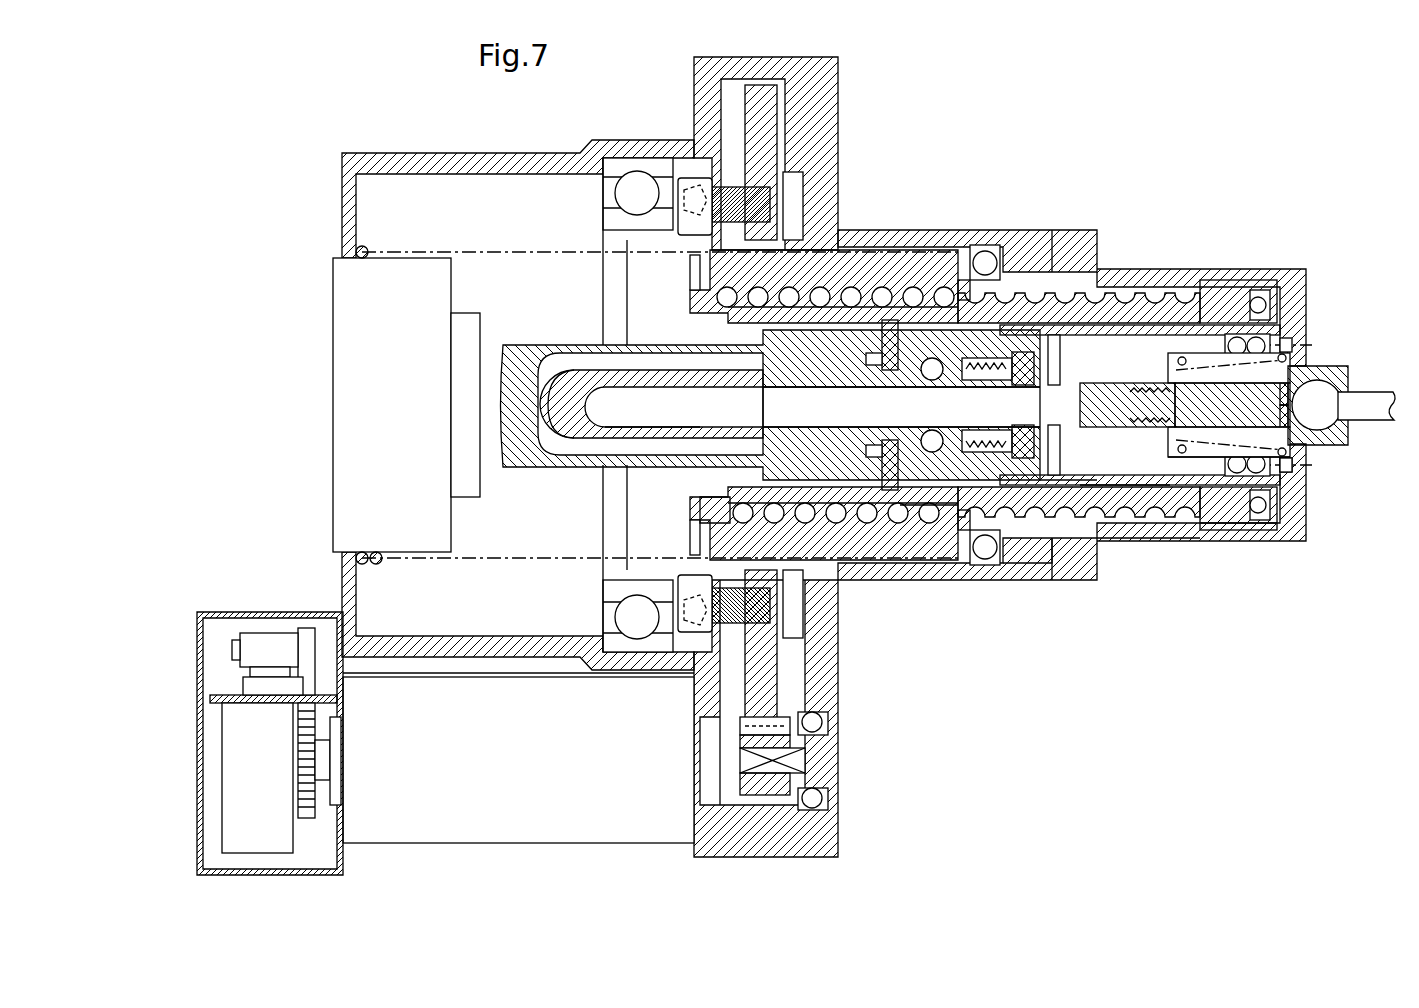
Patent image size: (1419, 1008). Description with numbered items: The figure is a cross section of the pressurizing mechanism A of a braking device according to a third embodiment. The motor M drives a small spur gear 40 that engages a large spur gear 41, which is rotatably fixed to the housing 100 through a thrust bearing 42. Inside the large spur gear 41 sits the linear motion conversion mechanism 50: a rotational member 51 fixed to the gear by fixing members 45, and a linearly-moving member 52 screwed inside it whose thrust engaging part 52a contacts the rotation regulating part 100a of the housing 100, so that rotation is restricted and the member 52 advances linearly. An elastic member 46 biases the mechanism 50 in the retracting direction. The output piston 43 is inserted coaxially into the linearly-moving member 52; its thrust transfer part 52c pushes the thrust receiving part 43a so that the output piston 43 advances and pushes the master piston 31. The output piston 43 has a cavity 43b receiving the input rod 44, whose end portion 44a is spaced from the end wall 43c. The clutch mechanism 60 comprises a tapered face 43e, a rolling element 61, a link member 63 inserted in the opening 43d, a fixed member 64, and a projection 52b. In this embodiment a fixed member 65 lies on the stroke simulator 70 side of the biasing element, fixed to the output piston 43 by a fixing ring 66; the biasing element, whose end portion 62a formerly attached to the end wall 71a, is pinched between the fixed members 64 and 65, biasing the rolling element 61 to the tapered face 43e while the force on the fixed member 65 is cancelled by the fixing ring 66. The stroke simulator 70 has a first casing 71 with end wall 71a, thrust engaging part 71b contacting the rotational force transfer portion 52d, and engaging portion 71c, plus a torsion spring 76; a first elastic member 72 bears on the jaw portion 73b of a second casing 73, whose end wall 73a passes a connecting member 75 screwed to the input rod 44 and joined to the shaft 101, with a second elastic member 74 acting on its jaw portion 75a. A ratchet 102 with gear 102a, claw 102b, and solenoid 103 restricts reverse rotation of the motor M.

The housing 100 is at (838, 70).
The rotation regulating part 100a is at (1080, 290).
The shaft 101 is at (1372, 395).
The ratchet 102 is at (308, 829).
The gear 102a is at (320, 748).
The claw 102b is at (305, 638).
The solenoid 103 is at (225, 752).
The master piston 31 is at (338, 275).
The small spur gear 40 is at (770, 795).
The large spur gear 41 is at (780, 130).
The thrust bearing 42 is at (852, 640).
The output piston 43 is at (855, 470).
The thrust receiving part 43a is at (705, 522).
The cavity 43b is at (620, 420).
The end wall 43c is at (600, 375).
The opening 43d is at (901, 407).
The tapered face 43e is at (950, 378).
The input rod 44 is at (1100, 450).
The end portion 44a is at (668, 430).
The fixing member 45 is at (692, 185).
The elastic member 46 is at (382, 562).
The linear motion conversion mechanism 50 is at (824, 283).
The rotational member 51 is at (705, 283).
The linearly-moving member 52 is at (1030, 300).
The thrust engaging part 52a is at (1215, 290).
The projection 52b is at (958, 300).
The thrust transfer part 52c is at (922, 520).
The rotational force transfer portion 52d is at (985, 550).
The clutch mechanism 60 is at (890, 320).
The rolling element 61 is at (930, 378).
The end portion 62a is at (1022, 520).
The link member 63 is at (885, 377).
The fixed member 64 is at (980, 380).
The fixed member 65 is at (1022, 385).
The fixing ring 66 is at (1055, 378).
The stroke simulator 70 is at (1280, 447).
The first casing 71 is at (1175, 527).
The end wall 71a is at (1045, 510).
The thrust engaging part 71b is at (1090, 520).
The engaging portion 71c is at (1290, 500).
The first elastic member 72 is at (1235, 527).
The second casing 73 is at (1205, 345).
The end wall 73a is at (1165, 330).
The jaw portion 73b is at (1272, 345).
The second elastic member 74 is at (1200, 527).
The connecting member 75 is at (1180, 405).
The jaw portion 75a is at (1265, 376).
The torsion spring 76 is at (1258, 295).
The motor M is at (550, 832).
The pressurizing mechanism A is at (1238, 150).